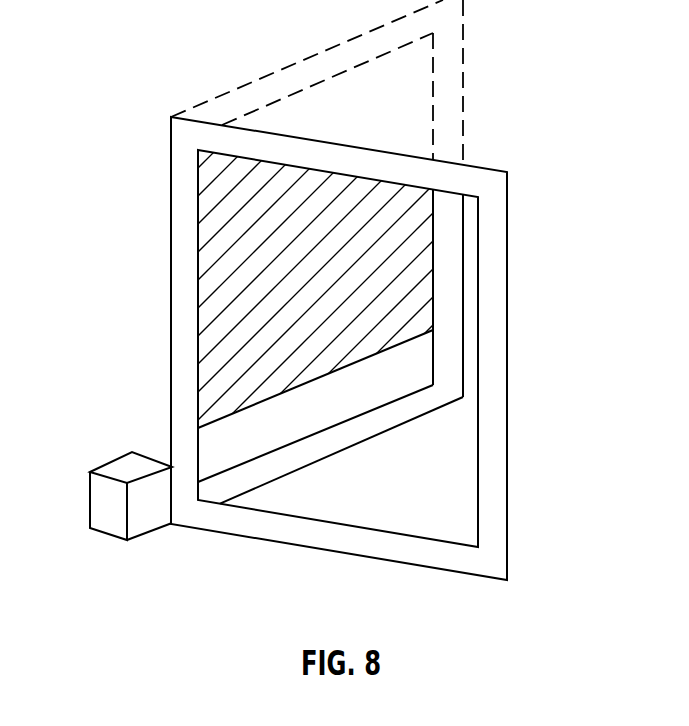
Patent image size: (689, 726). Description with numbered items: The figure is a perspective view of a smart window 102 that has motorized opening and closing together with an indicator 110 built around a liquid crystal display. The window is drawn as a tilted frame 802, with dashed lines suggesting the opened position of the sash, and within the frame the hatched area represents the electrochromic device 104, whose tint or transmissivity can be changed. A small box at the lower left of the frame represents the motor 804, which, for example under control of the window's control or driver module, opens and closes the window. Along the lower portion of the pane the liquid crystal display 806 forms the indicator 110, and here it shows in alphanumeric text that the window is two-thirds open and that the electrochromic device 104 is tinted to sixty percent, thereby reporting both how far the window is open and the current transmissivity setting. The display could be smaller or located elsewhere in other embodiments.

The smart window 102 is at (327, 442).
The electrochromic device 104 is at (309, 325).
The indicator 110 is at (358, 408).
The window frame 802 is at (322, 540).
The motor 804 is at (102, 500).
The liquid crystal display 806 is at (427, 367).